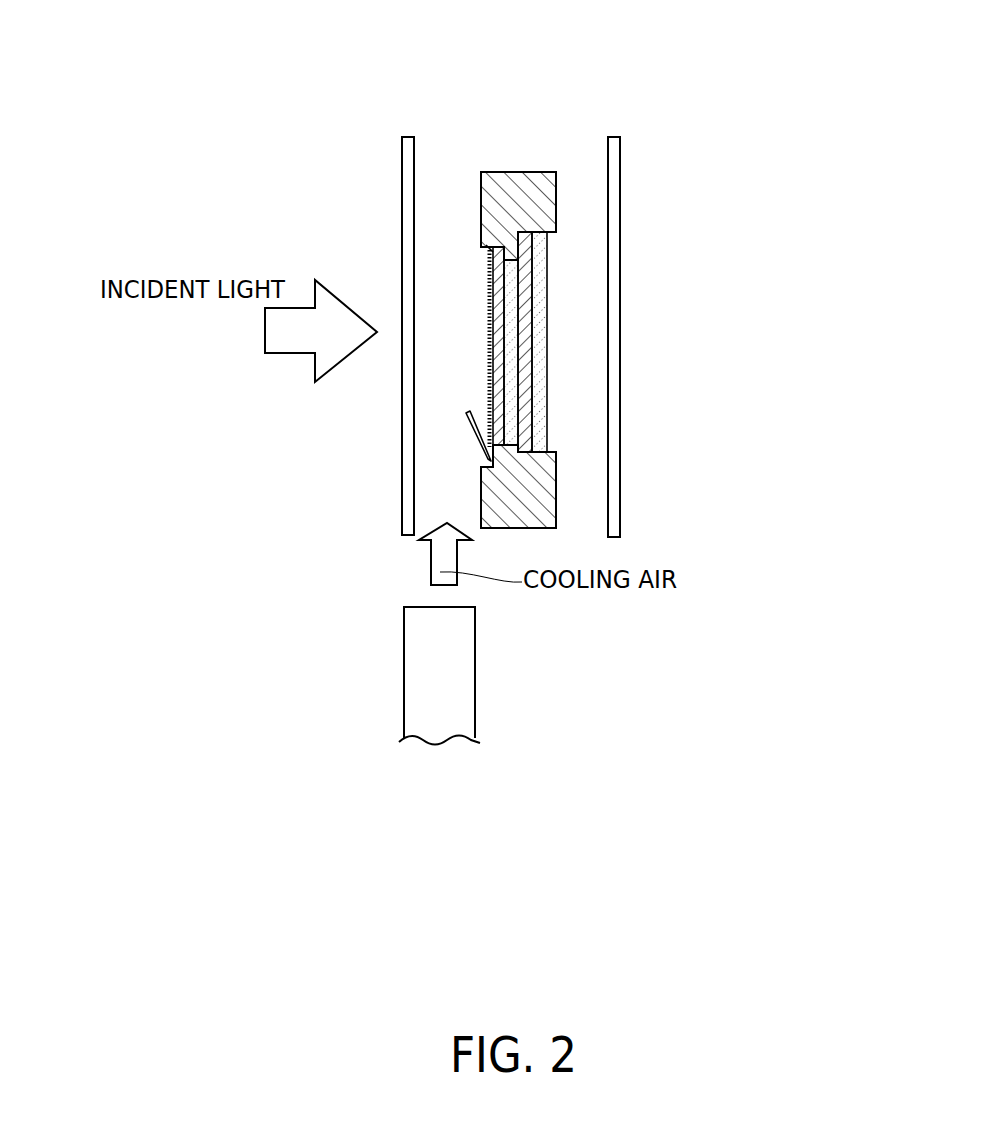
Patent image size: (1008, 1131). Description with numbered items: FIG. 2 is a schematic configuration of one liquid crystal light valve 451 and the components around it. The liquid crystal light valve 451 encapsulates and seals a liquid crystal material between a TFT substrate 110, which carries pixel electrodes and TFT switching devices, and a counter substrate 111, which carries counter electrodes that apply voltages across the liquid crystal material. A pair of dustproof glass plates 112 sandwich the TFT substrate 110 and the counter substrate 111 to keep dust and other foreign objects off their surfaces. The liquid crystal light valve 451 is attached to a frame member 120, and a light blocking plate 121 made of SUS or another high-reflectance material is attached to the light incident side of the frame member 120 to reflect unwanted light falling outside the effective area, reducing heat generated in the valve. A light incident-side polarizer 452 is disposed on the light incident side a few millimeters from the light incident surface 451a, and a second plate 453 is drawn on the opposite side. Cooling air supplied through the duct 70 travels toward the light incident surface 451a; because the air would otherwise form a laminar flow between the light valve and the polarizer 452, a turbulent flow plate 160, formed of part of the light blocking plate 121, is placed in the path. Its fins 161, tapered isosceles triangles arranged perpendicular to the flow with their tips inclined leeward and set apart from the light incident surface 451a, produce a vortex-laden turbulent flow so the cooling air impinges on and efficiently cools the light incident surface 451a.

The liquid crystal light valve 451 is at (516, 104).
The light incident surface 451a is at (488, 305).
The light incident-side polarizer 452 is at (410, 138).
The light exit side plate 453 is at (616, 138).
The frame member 120 is at (547, 212).
The light blocking plate 121 is at (490, 270).
The TFT substrate 110 is at (612, 345).
The counter substrate 111 is at (523, 397).
The dustproof glass plates 112 is at (537, 363).
The turbulent flow plate 160 is at (370, 430).
The fins 161 is at (466, 420).
The duct 70 is at (455, 700).